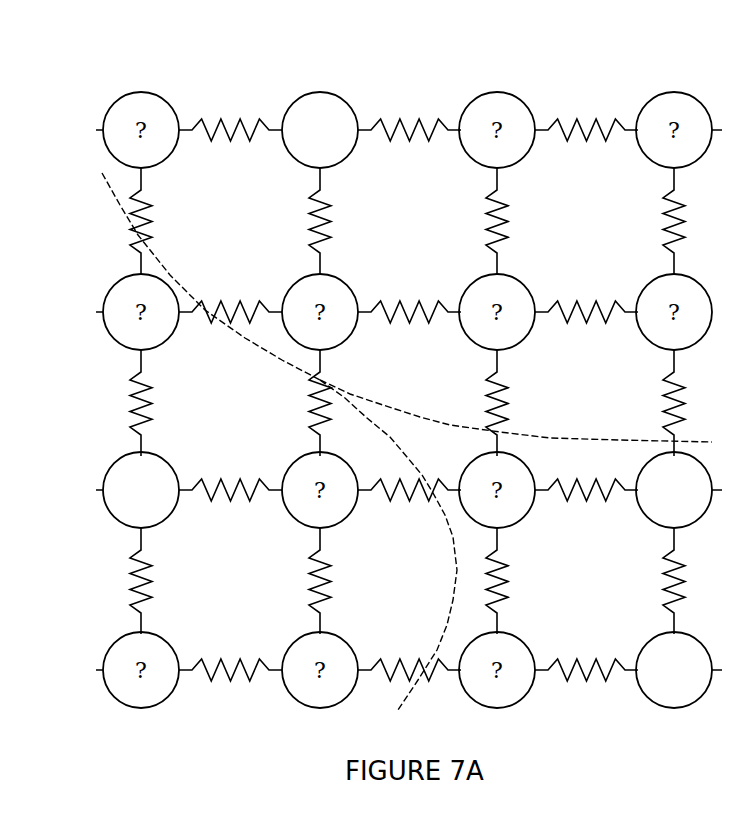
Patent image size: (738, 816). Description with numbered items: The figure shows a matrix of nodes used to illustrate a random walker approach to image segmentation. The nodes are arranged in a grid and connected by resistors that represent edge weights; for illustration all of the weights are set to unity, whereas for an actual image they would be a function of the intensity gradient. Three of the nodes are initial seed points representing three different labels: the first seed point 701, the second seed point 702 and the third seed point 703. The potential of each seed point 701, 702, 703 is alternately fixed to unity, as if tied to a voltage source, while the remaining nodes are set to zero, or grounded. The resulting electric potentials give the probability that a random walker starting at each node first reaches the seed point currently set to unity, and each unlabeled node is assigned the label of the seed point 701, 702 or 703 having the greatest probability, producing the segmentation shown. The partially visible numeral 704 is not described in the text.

The seed point L1 701 is at (120, 518).
The seed point L2 702 is at (303, 99).
The seed point L3 703 is at (653, 699).
The unlabeled node 704 is at (737, 530).